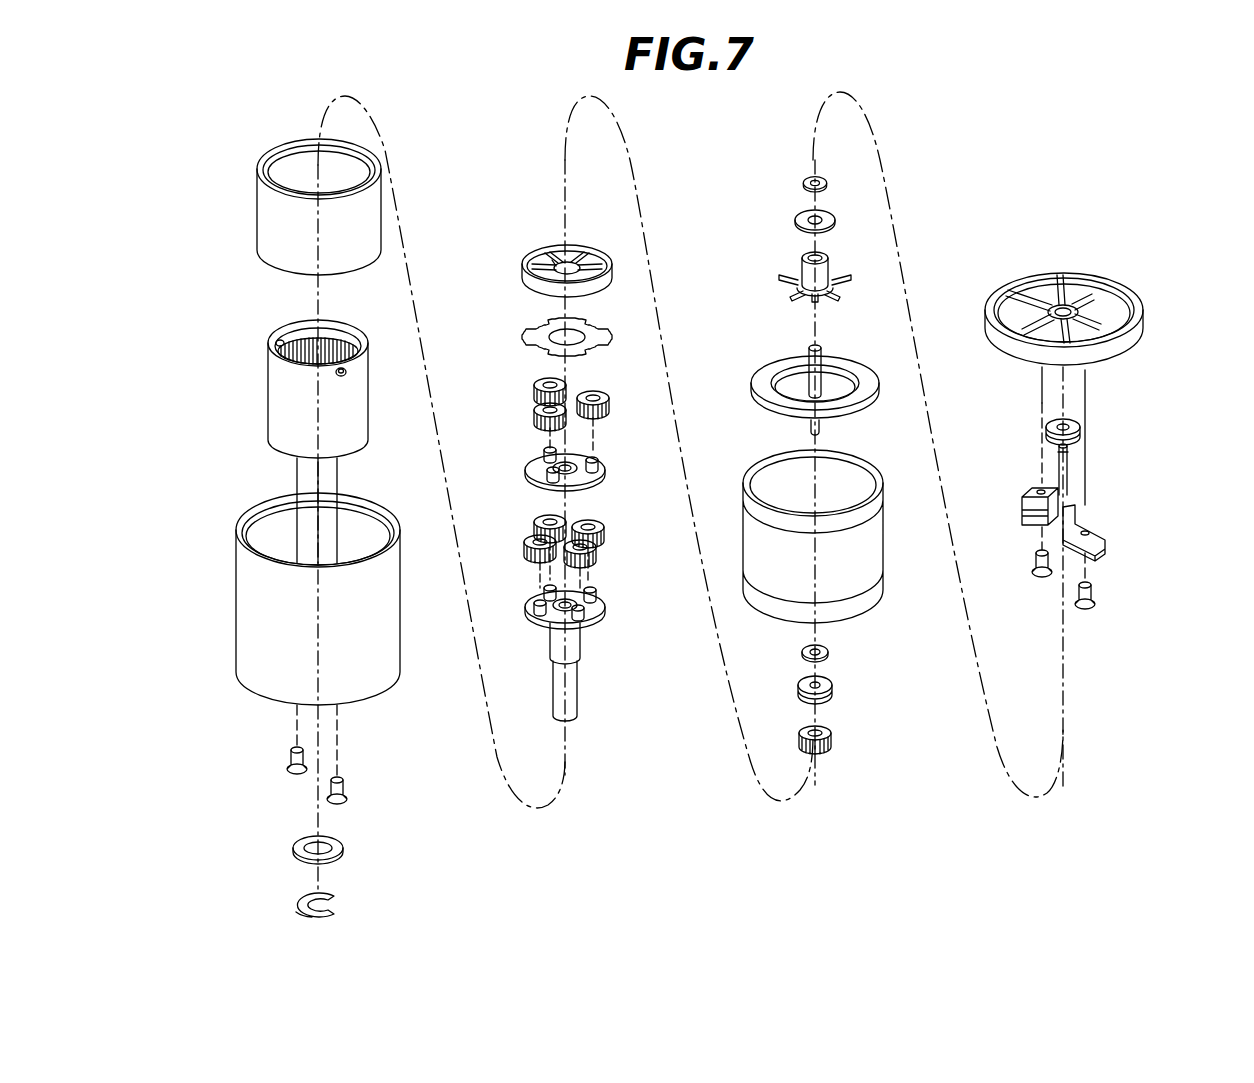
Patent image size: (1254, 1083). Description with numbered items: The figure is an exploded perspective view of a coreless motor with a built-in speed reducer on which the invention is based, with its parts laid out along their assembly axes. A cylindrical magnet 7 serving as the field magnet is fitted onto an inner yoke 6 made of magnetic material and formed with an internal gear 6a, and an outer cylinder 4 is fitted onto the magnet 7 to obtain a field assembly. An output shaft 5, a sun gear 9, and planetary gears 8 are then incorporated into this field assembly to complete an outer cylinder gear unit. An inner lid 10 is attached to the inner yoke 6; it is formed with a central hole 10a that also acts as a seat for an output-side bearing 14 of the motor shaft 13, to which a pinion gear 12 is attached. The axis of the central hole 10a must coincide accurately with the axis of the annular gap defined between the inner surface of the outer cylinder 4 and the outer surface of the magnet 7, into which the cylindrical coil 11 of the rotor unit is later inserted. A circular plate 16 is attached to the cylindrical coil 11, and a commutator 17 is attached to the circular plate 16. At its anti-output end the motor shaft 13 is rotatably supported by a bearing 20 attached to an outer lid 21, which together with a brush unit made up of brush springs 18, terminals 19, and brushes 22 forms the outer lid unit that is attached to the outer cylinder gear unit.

The outer cylinder 4 is at (236, 597).
The output shaft 5 is at (578, 688).
The inner yoke 6 is at (268, 392).
The internal gear 6a is at (278, 346).
The cylindrical magnet 7 is at (256, 212).
The planetary gears 8 is at (604, 404).
The sun gear 9 is at (606, 472).
The inner lid 10 is at (522, 278).
The central hole 10a is at (556, 262).
The cylindrical coil 11 is at (877, 548).
The pinion gear 12 is at (832, 740).
The motor shaft 13 is at (808, 353).
The output-side bearing 14 is at (835, 688).
The circular plate 16 is at (760, 386).
The commutator 17 is at (800, 272).
The brush springs 18 is at (1022, 515).
The terminals 19 is at (1055, 470).
The bearing 20 is at (1082, 430).
The outer lid 21 is at (1145, 322).
The brushes 22 is at (1087, 510).